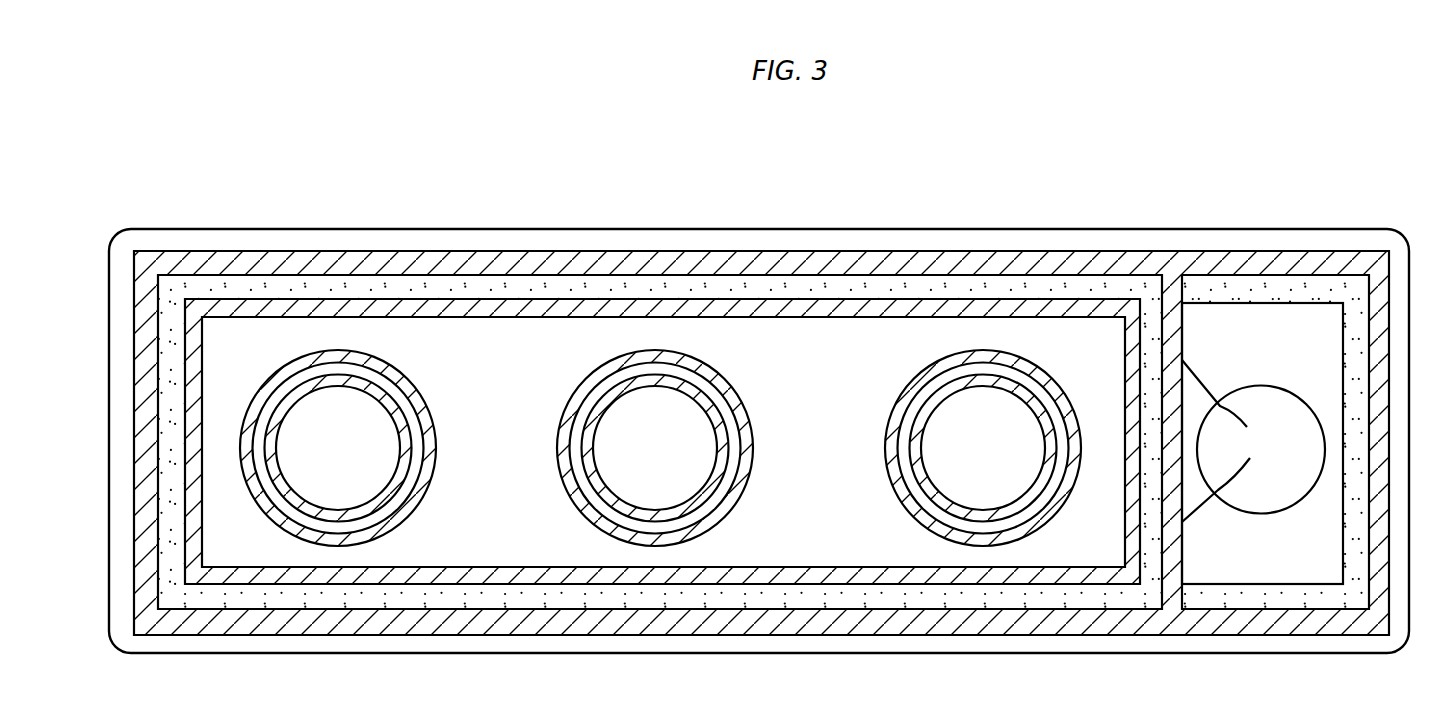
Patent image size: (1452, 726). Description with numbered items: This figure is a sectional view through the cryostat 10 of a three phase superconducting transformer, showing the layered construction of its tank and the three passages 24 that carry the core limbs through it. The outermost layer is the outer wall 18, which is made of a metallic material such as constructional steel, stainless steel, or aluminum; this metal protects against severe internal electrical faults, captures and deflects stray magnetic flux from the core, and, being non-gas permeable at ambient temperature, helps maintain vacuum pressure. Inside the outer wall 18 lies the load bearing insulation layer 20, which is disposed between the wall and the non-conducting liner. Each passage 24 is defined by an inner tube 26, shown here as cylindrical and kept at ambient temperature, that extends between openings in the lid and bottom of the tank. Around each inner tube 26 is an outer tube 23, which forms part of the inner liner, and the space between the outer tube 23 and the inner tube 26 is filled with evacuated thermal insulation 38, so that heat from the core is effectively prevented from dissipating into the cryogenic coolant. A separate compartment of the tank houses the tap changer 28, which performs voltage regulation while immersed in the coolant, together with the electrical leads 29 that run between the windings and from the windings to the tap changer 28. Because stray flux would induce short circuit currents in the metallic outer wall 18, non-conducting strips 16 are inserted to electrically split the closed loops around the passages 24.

The cryostat 10 is at (275, 163).
The non-conducting strips 16 is at (1393, 379).
The outer wall 18 is at (750, 267).
The load bearing insulation layer 20 is at (928, 288).
The outer tubes 23 is at (428, 408).
The passages 24 is at (311, 455).
The inner tubes 26 is at (317, 510).
The tap changer 28 is at (1248, 503).
The electrical leads 29 is at (1182, 449).
The evacuated thermal insulation 38 is at (578, 463).